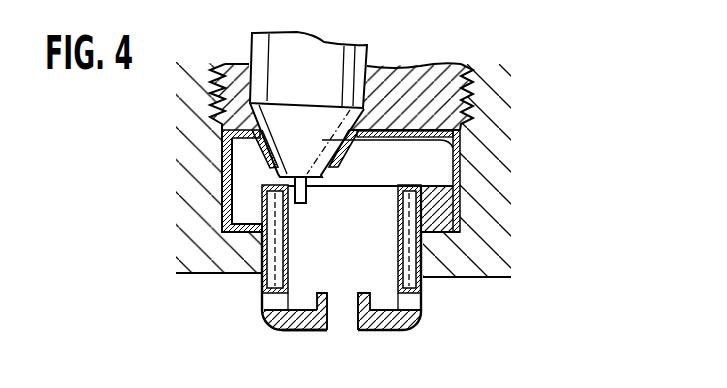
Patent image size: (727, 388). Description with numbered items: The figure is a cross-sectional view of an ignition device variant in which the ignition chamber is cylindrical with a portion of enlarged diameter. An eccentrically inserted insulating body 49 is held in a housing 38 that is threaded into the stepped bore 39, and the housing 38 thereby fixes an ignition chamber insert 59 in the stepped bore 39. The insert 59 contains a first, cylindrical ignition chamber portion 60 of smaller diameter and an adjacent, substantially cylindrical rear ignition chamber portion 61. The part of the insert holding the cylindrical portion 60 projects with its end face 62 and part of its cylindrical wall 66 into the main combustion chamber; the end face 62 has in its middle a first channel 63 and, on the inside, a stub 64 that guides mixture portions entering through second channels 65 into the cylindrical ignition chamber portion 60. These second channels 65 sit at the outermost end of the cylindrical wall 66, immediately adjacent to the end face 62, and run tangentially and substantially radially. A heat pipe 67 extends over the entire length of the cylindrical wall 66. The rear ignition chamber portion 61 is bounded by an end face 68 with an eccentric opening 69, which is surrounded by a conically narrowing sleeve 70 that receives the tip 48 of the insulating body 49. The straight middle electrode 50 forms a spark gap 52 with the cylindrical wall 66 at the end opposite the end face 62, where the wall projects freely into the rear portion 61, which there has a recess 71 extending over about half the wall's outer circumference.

The housing 38 is at (406, 83).
The stepped bore 39 is at (453, 208).
The tip of the insulating body 48 is at (307, 140).
The insulating body 49 is at (308, 70).
The middle electrode 50 is at (308, 192).
The spark gap 52 is at (291, 205).
The ignition chamber insert 59 is at (407, 336).
The first, cylindrical ignition chamber portion 60 is at (370, 226).
The rear ignition chamber portion 61 is at (440, 163).
The end face 62 is at (294, 331).
The first channel 63 is at (346, 312).
The stub 64 is at (332, 330).
The second channels 65 is at (413, 304).
The cylindrical wall 66 is at (262, 297).
The heat pipe 67 is at (408, 276).
The end face 68 is at (455, 142).
The opening 69 is at (217, 115).
The sleeve 70 is at (267, 153).
The recess 71 is at (245, 208).